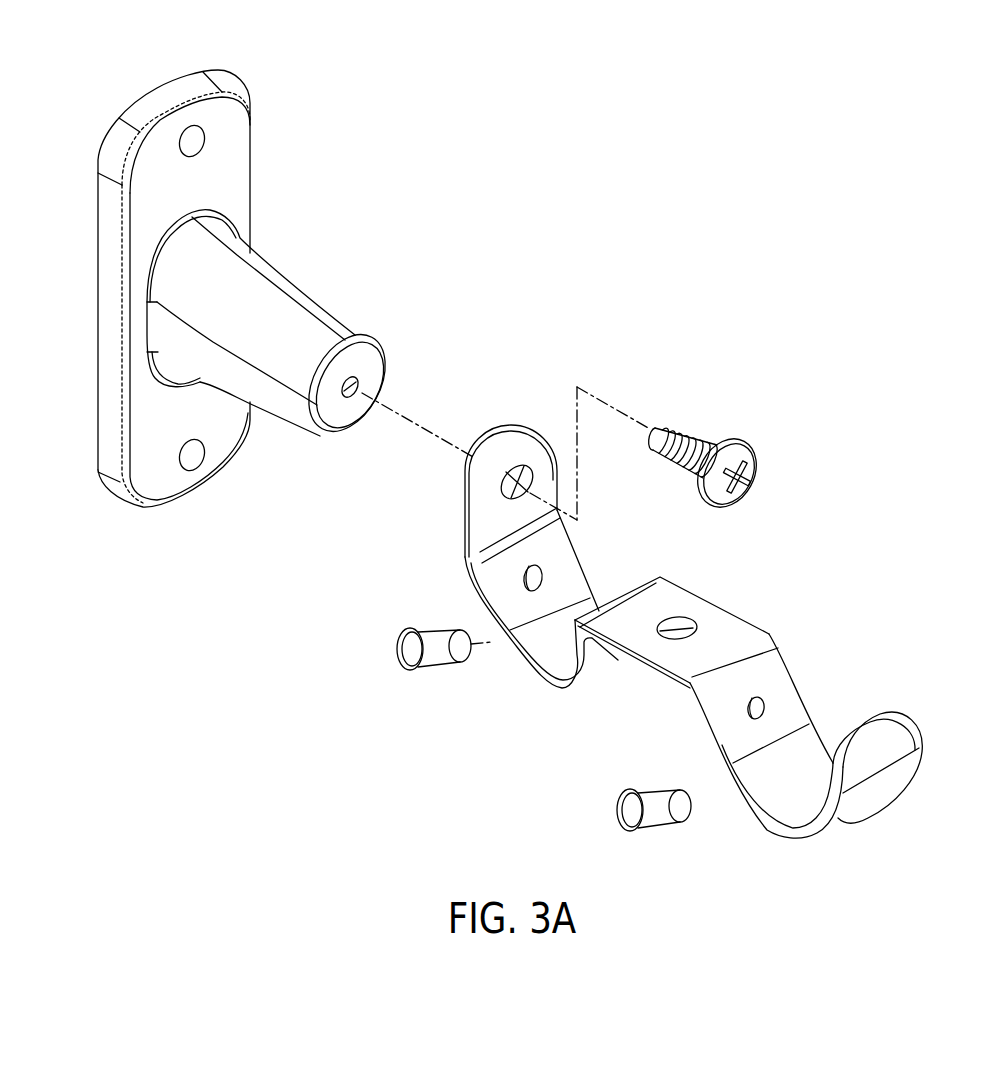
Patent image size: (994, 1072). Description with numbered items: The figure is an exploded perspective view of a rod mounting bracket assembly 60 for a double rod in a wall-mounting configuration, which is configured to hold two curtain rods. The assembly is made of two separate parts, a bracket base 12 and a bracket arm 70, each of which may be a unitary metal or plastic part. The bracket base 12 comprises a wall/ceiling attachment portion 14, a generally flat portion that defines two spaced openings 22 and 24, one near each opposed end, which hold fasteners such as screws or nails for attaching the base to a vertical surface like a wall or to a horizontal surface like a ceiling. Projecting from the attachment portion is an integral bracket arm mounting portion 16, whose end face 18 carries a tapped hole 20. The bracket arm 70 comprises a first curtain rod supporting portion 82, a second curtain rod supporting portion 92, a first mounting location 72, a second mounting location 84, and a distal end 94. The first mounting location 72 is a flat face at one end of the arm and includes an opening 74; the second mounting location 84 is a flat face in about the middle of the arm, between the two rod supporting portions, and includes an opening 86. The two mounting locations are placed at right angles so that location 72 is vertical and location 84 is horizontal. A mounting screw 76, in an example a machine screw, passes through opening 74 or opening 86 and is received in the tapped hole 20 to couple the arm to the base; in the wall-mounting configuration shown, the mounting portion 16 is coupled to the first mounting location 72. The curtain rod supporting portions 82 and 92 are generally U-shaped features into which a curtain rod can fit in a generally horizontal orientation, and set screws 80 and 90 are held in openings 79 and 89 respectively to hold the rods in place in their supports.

The bracket base 12 is at (245, 268).
The wall/ceiling attachment portion 14 is at (211, 288).
The bracket arm mounting portion 16 is at (251, 318).
The end face 18 is at (353, 342).
The tapped hole 20 is at (405, 366).
The opening 22 is at (173, 80).
The opening 24 is at (114, 485).
The rod mounting bracket assembly 60 is at (618, 624).
The bracket arm 70 is at (739, 398).
The first mounting location 72 is at (521, 449).
The opening 74 is at (464, 506).
The mounting screw 76 is at (739, 464).
The opening 79 is at (585, 558).
The set screw 80 is at (434, 686).
The first curtain rod supporting portion 82 is at (541, 632).
The second mounting location 84 is at (676, 600).
The opening 86 is at (730, 605).
The opening 89 is at (808, 687).
The set screw 90 is at (654, 846).
The second curtain rod supporting portion 92 is at (766, 773).
The distal end 94 is at (881, 736).